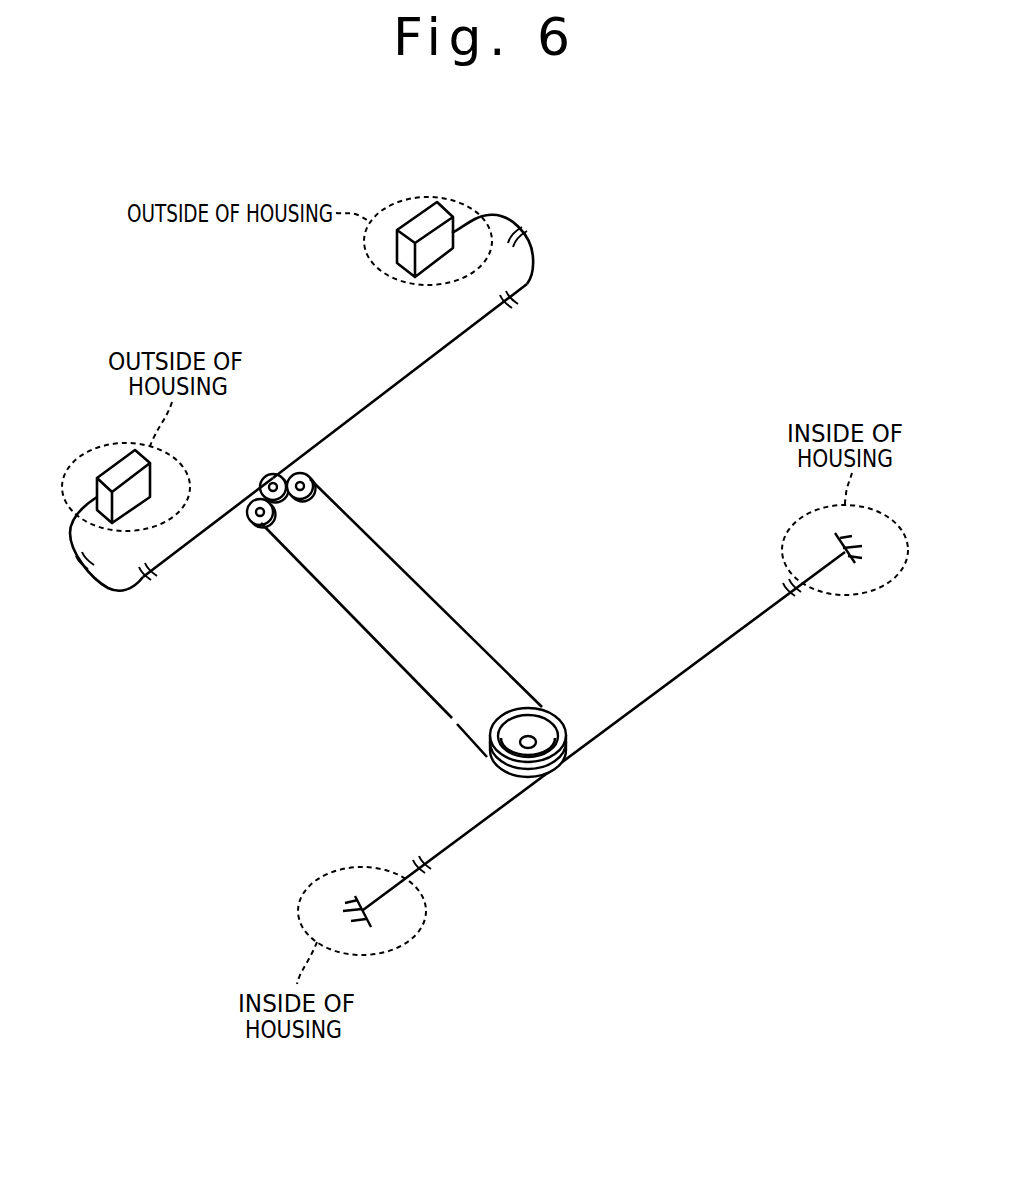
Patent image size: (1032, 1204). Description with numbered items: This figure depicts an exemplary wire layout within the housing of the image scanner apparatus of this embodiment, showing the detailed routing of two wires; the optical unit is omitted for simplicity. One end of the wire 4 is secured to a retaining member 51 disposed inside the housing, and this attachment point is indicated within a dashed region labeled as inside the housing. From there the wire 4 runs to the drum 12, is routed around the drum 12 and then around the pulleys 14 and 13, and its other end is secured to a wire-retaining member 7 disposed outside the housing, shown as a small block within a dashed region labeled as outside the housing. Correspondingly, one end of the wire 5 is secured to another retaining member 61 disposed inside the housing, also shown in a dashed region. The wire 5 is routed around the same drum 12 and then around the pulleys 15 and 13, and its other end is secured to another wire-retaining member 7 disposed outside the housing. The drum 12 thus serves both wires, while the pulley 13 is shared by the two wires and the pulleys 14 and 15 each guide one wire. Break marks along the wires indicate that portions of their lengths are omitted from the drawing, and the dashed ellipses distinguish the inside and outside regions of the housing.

The wire 4 is at (484, 216).
The wire 5 is at (71, 516).
The wire-retaining member 7 is at (418, 208).
The drum 12 is at (553, 770).
The pulley 13 is at (267, 475).
The pulley 14 is at (306, 476).
The pulley 15 is at (252, 523).
The retaining member 51 is at (368, 921).
The retaining member 61 is at (838, 540).